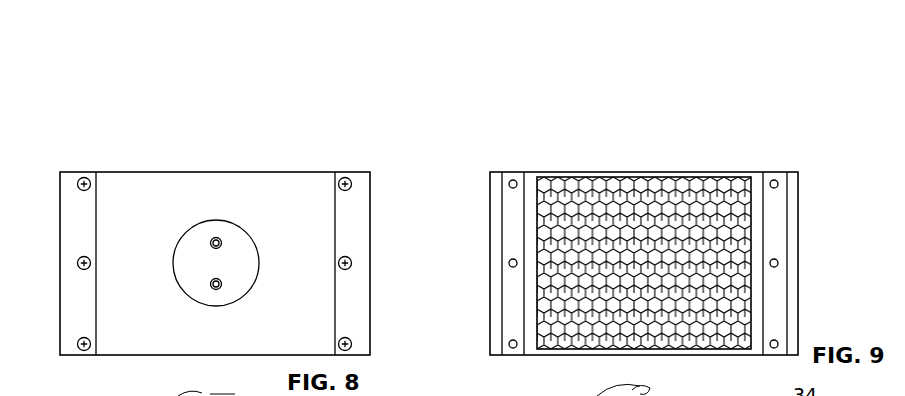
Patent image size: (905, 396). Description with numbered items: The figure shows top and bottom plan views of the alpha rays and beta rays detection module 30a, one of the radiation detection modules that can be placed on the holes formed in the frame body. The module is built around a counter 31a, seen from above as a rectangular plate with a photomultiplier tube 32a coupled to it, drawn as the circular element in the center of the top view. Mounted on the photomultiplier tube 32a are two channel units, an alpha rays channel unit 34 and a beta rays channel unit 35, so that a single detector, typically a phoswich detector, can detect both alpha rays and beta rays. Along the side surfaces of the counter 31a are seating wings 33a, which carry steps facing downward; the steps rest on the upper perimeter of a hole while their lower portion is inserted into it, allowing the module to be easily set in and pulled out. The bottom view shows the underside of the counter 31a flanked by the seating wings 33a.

In FIG. 8, the alpha rays and beta rays detection module 30a is at (132, 143).
In FIG. 8, the counter 31a is at (286, 174).
In FIG. 9, the counter 31a is at (540, 172).
In FIG. 8, the photomultiplier tube 32a is at (212, 218).
In FIG. 8, the seating wing 33a is at (490, 265).
In FIG. 9, the seating wing 33a is at (490, 265).
In FIG. 8, the alpha rays channel unit 34 is at (207, 242).
In FIG. 8, the beta rays channel unit 35 is at (207, 283).